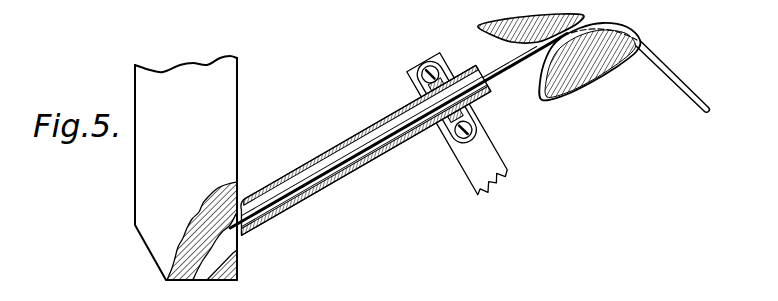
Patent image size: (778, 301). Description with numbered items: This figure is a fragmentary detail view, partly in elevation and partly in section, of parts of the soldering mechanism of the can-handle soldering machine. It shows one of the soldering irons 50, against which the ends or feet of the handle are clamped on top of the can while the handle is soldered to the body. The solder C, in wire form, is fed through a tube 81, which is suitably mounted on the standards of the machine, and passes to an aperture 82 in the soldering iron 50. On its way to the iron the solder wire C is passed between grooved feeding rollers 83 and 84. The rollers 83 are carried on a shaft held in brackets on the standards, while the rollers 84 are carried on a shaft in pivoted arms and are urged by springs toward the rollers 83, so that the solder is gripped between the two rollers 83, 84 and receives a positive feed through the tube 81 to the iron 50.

The soldering iron 50 is at (138, 184).
The tube 81 is at (322, 190).
The aperture 82 is at (236, 240).
The grooved feeding roller 83 is at (520, 34).
The grooved feeding roller 84 is at (580, 82).
The solder C is at (685, 97).